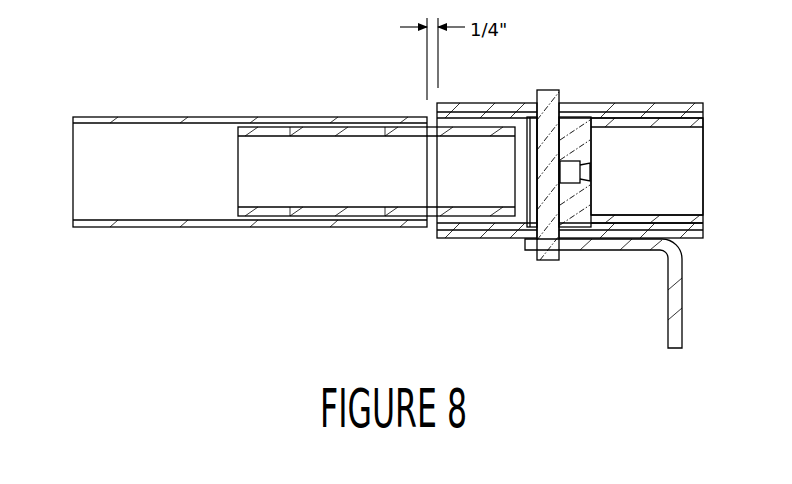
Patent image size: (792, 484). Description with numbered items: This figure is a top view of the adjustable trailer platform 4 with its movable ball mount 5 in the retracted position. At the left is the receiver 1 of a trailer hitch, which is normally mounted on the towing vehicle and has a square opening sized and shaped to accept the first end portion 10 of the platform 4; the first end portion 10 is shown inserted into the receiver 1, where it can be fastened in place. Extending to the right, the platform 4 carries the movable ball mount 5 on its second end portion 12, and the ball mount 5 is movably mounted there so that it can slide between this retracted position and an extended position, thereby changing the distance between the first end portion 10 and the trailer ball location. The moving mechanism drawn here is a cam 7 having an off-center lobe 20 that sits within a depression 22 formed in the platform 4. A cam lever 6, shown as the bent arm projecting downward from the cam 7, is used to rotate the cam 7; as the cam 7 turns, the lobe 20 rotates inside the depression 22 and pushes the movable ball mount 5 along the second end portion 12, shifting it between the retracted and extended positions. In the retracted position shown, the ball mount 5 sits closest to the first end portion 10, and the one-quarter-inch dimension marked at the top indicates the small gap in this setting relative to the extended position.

The receiver 1 is at (127, 115).
The first end portion 10 is at (344, 125).
The second end portion 12 is at (471, 116).
The depression 22 is at (523, 129).
The cam 7 is at (548, 262).
The off-center lobe 20 is at (574, 132).
The movable ball mount 5 is at (694, 104).
The trailer platform 4 is at (704, 172).
The cam lever 6 is at (684, 295).